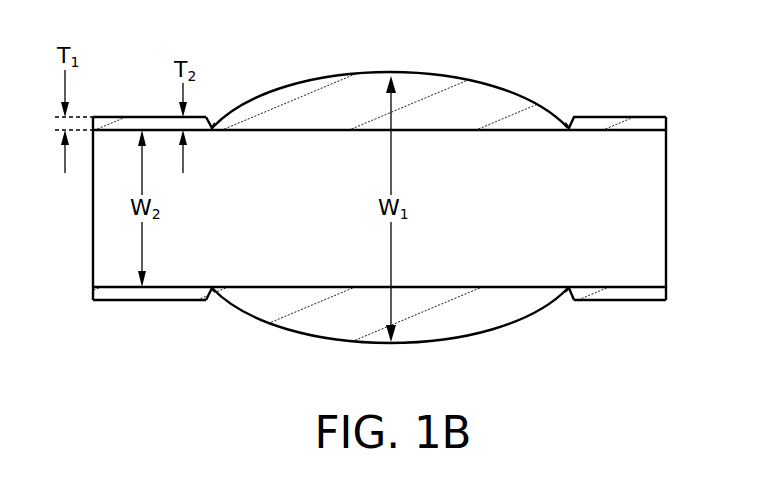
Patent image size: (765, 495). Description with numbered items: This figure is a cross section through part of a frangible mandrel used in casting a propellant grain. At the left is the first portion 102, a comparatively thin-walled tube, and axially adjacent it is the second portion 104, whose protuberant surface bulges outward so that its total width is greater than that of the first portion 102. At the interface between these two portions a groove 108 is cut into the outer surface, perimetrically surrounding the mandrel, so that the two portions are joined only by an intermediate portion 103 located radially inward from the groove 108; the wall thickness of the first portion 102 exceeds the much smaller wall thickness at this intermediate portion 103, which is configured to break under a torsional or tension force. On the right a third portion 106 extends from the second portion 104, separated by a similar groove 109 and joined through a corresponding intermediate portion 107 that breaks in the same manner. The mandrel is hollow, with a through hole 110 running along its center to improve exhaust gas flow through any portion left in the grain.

The first portion 102 is at (120, 125).
The intermediate portion 103 is at (213, 152).
The second portion 104 is at (432, 93).
The third portion 106 is at (650, 124).
The intermediate portion 107 is at (571, 152).
The groove 108 is at (213, 99).
The groove 109 is at (571, 99).
The through hole 110 is at (467, 287).